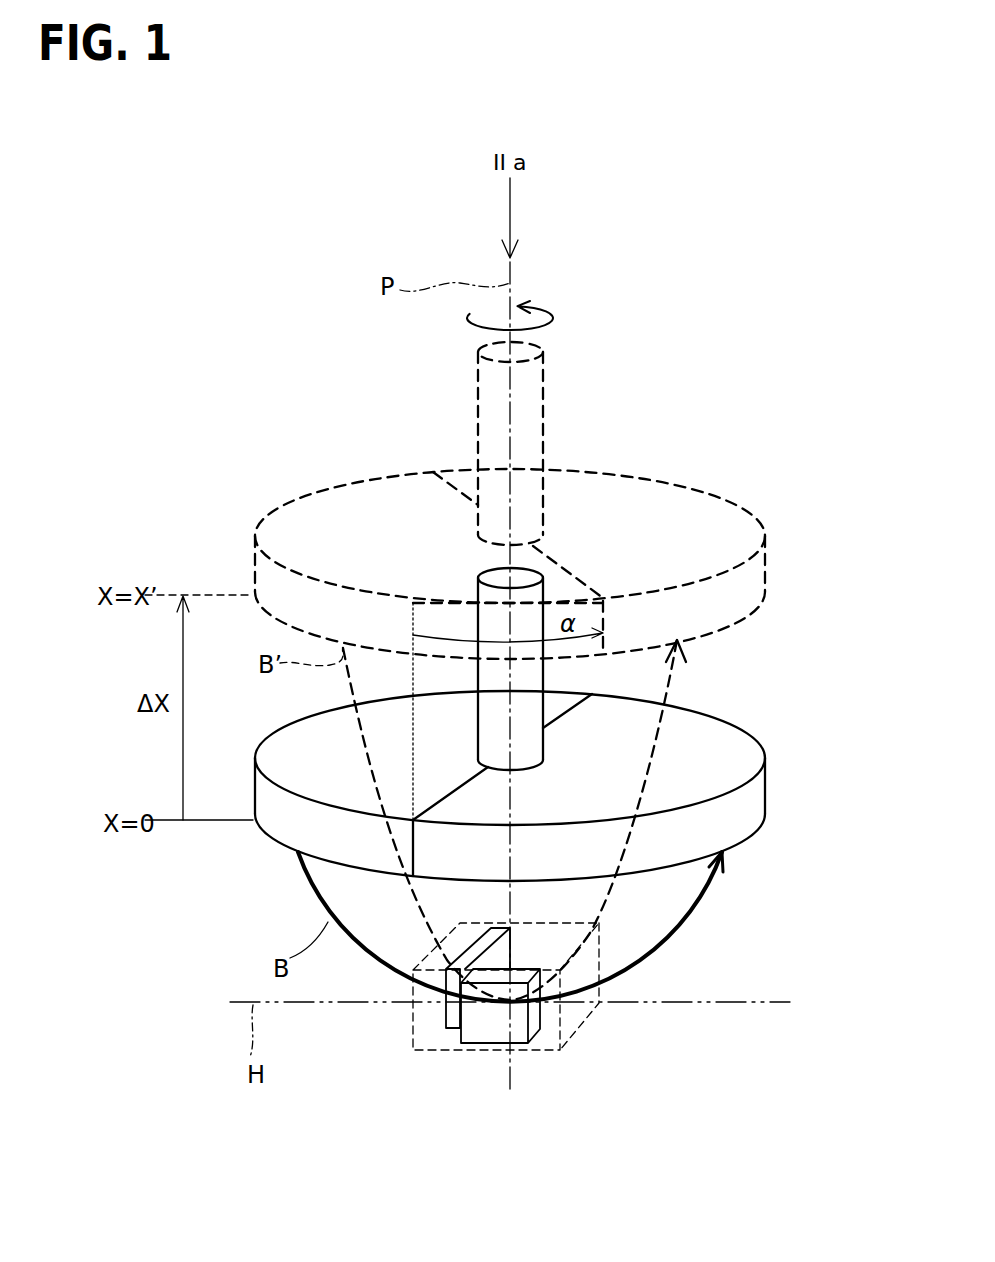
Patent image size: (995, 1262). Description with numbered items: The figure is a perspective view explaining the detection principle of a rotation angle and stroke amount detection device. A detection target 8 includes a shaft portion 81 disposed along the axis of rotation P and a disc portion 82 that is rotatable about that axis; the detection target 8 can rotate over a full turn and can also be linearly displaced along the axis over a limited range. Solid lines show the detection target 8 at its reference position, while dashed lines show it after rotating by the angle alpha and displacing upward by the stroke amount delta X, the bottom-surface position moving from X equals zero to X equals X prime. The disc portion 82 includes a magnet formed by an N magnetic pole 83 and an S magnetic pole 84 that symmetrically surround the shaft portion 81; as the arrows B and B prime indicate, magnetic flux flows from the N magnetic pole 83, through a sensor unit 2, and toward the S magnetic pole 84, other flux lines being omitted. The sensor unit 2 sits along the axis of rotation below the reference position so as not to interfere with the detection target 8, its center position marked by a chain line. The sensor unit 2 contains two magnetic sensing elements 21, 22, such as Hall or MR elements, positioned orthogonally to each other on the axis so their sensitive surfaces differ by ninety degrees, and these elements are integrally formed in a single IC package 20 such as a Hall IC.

The sensor unit 2 is at (503, 1039).
The detection target 8 is at (766, 682).
The IC package 20 is at (587, 1027).
The magnetic sensing element 21 is at (482, 1022).
The magnetic sensing element 22 is at (443, 1017).
The shaft portion 81 is at (532, 673).
The disc portion 82 is at (752, 823).
The N magnetic pole 83 is at (280, 752).
The S magnetic pole 84 is at (745, 747).